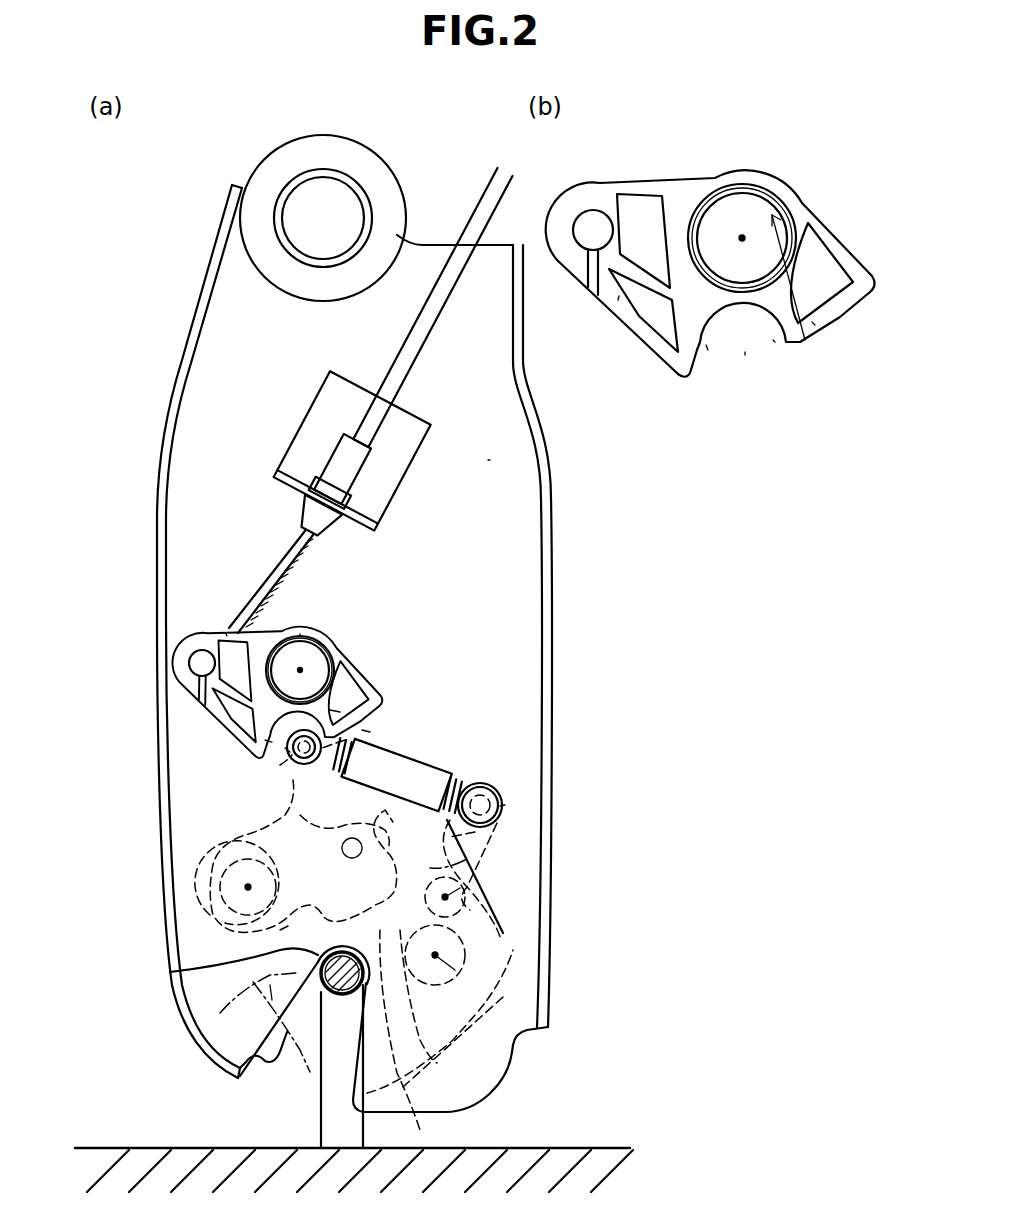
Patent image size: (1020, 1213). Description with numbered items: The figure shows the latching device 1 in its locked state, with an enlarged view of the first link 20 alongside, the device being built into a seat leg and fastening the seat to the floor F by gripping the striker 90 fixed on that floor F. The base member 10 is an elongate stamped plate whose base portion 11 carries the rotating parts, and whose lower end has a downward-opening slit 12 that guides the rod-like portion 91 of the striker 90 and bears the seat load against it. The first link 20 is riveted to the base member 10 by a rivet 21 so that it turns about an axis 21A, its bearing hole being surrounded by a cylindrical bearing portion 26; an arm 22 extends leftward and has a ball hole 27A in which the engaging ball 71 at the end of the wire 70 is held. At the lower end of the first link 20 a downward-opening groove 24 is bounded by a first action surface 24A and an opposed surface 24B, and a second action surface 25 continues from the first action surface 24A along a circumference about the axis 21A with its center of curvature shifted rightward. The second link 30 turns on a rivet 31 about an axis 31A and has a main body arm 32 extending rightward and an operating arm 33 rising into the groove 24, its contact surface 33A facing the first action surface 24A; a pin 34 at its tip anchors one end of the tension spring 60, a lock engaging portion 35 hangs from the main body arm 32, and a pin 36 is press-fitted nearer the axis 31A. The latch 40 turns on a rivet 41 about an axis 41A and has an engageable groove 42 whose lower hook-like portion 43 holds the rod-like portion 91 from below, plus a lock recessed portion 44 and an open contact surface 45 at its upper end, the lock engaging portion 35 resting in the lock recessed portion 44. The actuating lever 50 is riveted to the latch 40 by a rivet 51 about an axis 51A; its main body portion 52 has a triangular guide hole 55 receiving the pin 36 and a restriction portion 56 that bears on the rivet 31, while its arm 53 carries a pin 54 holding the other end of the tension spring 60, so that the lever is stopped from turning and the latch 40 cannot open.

The latching device 1 is at (186, 240).
The base member 10 is at (552, 549).
The base portion 11 is at (488, 458).
The slit 12 is at (272, 1000).
The first link 20 is at (195, 632).
The rivet 21 is at (325, 658).
The axis of rotation 21A is at (300, 666).
The arm 22 is at (226, 634).
The groove 24 is at (278, 768).
The first action surface 24A is at (345, 705).
The opposed surface 24B is at (265, 740).
The second action surface 25 is at (355, 738).
The cylindrical bearing portion 26 is at (330, 635).
The ball hole 27A is at (596, 222).
The second link 30 is at (208, 862).
The rivet 31 is at (215, 915).
The axis of rotation 31A is at (245, 887).
The main body arm 32 is at (258, 833).
The operating arm 33 is at (295, 770).
The contact surface 33A is at (345, 740).
The pin 34 is at (280, 765).
The lock engaging portion 35 is at (400, 815).
The pin 36 is at (365, 800).
The latch 40 is at (468, 1020).
The rivet 41 is at (465, 952).
The axis of rotation 41A is at (440, 958).
The engageable groove 42 is at (275, 962).
The hook-like portion 43 is at (290, 1000).
The lock recessed portion 44 is at (465, 860).
The open contact surface 45 is at (425, 765).
The actuating lever 50 is at (510, 800).
The rivet 51 is at (475, 910).
The axis of rotation 51A is at (470, 880).
The main body portion 52 is at (412, 1100).
The arm 53 is at (475, 832).
The pin 54 is at (505, 805).
The guide hole 55 is at (437, 1052).
The restriction portion 56 is at (280, 930).
The tension spring 60 is at (475, 780).
The wire 70 is at (278, 580).
The engaging ball 71 is at (196, 664).
The striker 90 is at (322, 1132).
The rod-like portion 91 is at (170, 972).
The floor F is at (578, 1148).